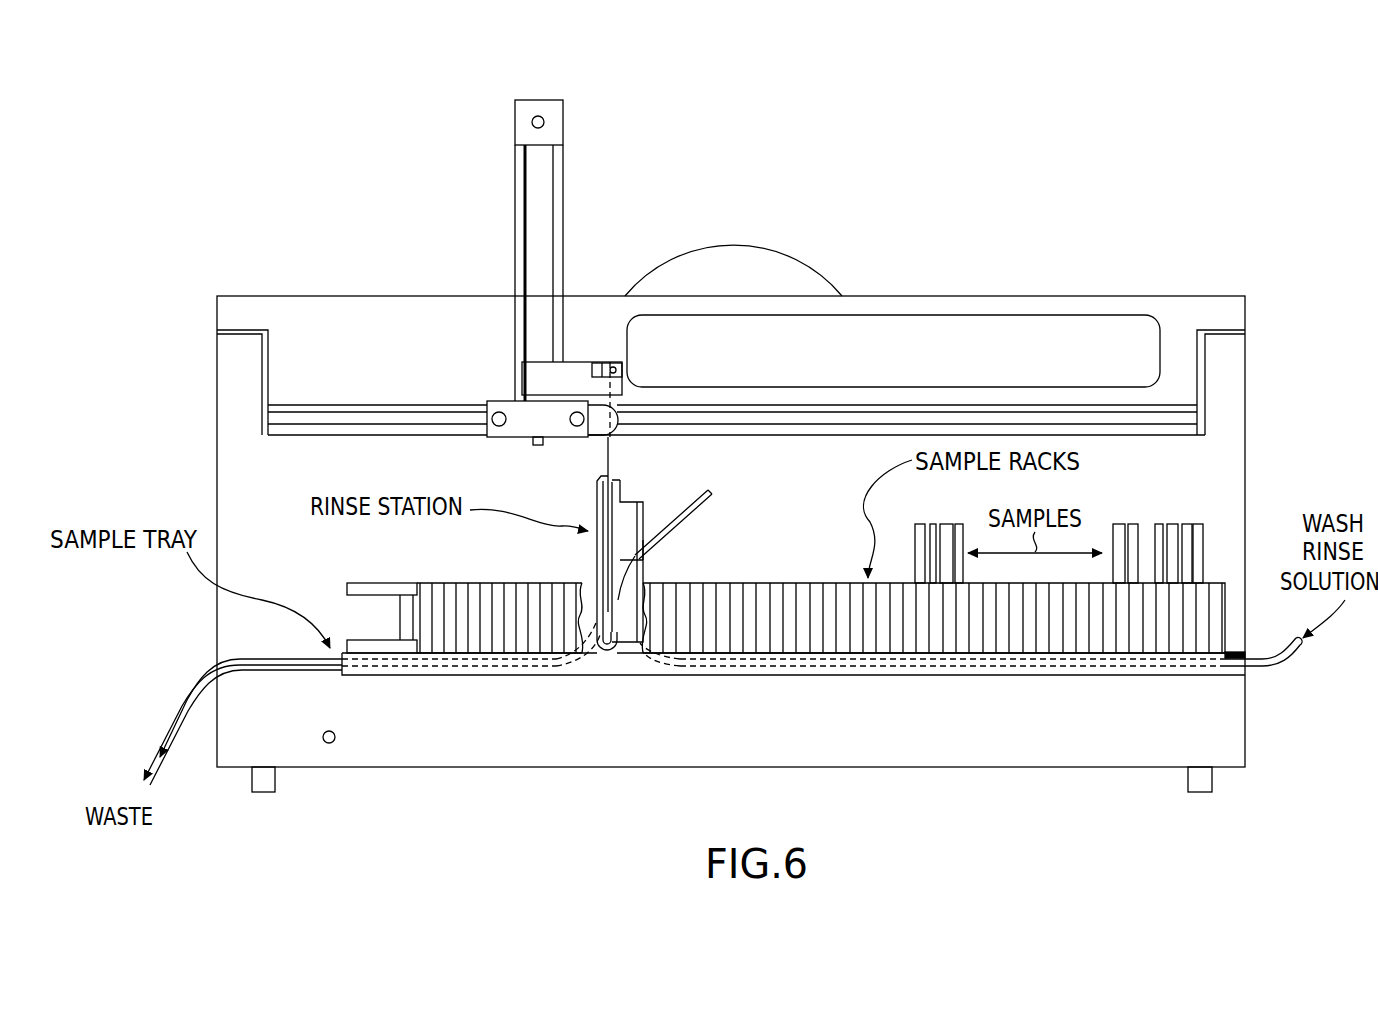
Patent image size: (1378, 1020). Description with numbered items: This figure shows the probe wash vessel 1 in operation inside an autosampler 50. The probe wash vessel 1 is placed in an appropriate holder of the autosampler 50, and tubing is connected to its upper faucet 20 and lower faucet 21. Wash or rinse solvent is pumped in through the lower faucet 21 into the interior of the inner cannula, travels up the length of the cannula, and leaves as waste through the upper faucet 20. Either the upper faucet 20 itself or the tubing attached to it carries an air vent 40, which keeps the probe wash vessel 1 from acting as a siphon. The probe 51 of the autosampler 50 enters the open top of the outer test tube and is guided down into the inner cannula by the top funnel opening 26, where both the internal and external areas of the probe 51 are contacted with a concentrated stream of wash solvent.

The probe wash vessel 1 is at (588, 555).
The upper faucet 20 is at (652, 495).
The lower faucet 21 is at (625, 656).
The top funnel opening 26 is at (598, 473).
The air vent 40 is at (668, 543).
The autosampler 50 is at (1197, 272).
The probe 51 is at (613, 444).